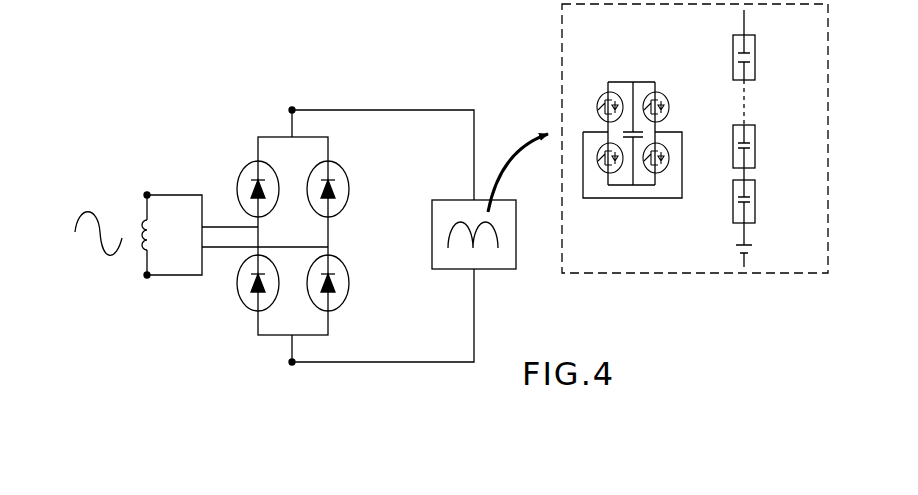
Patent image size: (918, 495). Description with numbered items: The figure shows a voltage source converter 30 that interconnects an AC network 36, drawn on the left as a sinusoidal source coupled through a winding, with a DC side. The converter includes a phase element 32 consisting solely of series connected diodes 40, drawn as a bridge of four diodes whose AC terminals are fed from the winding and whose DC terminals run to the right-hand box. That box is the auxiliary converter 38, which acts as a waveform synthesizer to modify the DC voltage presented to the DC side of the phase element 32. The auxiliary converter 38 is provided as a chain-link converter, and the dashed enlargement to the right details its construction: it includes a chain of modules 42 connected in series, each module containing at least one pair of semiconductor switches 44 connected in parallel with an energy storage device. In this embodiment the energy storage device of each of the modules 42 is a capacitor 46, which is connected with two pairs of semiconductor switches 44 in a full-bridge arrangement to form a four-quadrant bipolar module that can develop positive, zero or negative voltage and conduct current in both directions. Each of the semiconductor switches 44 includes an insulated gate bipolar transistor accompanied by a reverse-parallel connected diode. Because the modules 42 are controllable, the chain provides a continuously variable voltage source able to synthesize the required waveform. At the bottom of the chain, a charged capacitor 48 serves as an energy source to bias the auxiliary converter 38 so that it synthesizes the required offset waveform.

The voltage source converter 30 is at (148, 95).
The phase element 32 is at (339, 146).
The AC network 36 is at (75, 232).
The auxiliary converter 38 is at (424, 265).
The diodes 40 is at (240, 186).
The modules 42 is at (756, 60).
The semiconductor switches 44 is at (650, 96).
The capacitor 46 is at (636, 182).
The charged capacitor 48 is at (751, 252).